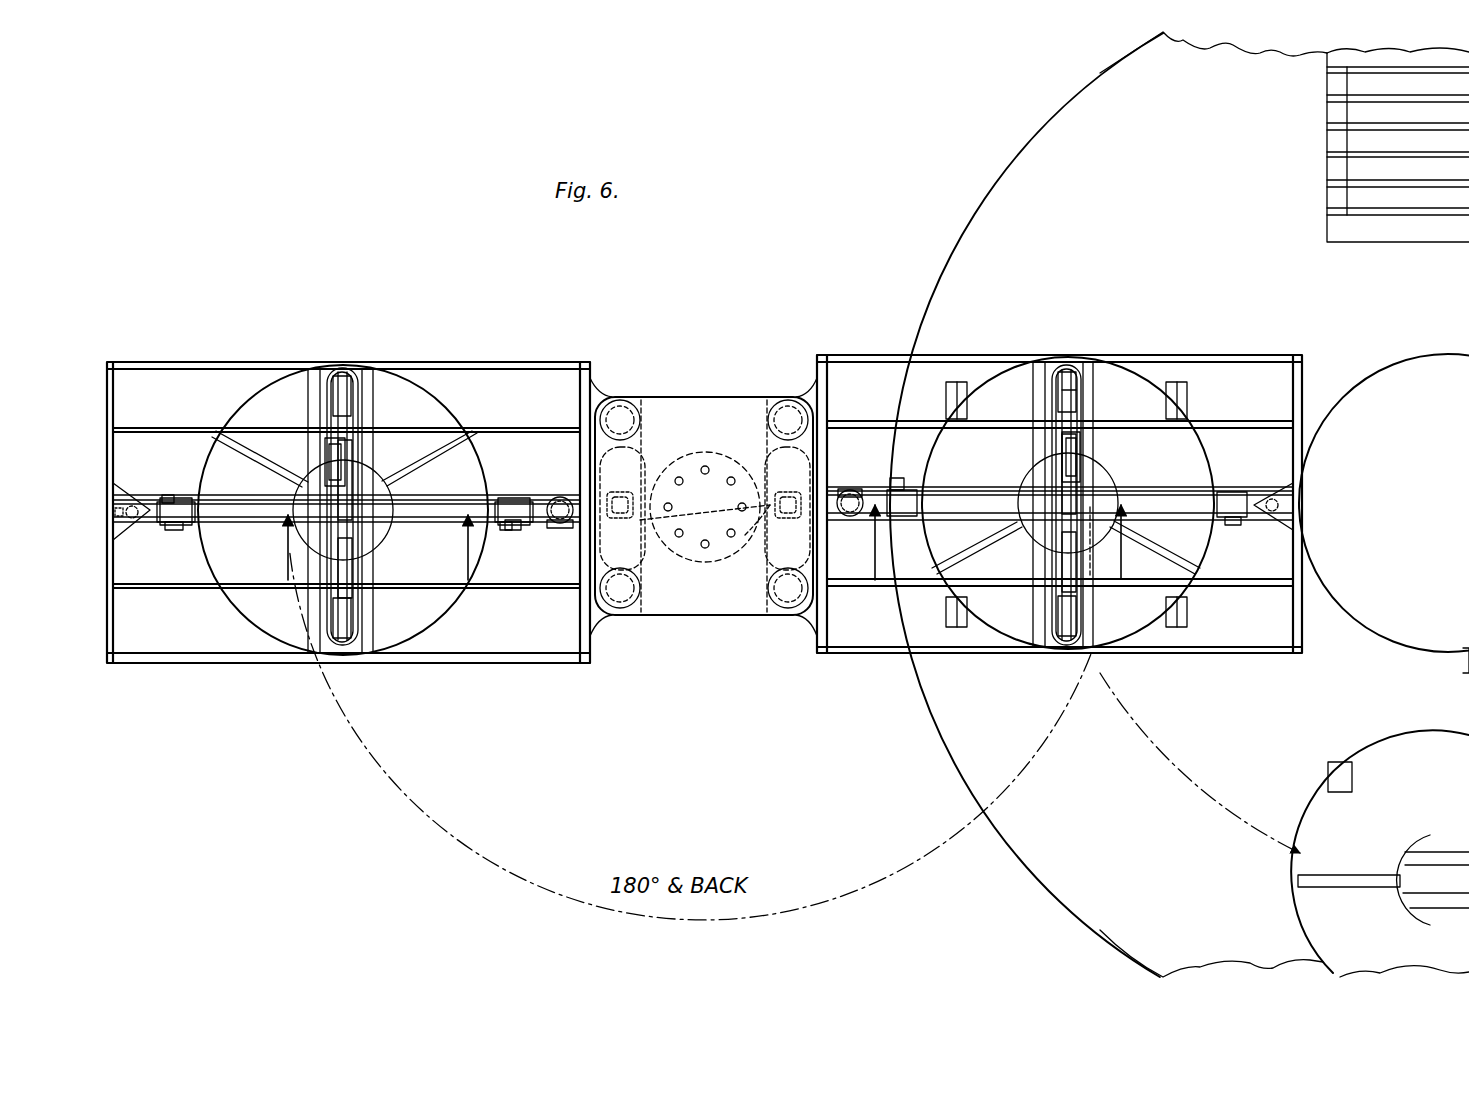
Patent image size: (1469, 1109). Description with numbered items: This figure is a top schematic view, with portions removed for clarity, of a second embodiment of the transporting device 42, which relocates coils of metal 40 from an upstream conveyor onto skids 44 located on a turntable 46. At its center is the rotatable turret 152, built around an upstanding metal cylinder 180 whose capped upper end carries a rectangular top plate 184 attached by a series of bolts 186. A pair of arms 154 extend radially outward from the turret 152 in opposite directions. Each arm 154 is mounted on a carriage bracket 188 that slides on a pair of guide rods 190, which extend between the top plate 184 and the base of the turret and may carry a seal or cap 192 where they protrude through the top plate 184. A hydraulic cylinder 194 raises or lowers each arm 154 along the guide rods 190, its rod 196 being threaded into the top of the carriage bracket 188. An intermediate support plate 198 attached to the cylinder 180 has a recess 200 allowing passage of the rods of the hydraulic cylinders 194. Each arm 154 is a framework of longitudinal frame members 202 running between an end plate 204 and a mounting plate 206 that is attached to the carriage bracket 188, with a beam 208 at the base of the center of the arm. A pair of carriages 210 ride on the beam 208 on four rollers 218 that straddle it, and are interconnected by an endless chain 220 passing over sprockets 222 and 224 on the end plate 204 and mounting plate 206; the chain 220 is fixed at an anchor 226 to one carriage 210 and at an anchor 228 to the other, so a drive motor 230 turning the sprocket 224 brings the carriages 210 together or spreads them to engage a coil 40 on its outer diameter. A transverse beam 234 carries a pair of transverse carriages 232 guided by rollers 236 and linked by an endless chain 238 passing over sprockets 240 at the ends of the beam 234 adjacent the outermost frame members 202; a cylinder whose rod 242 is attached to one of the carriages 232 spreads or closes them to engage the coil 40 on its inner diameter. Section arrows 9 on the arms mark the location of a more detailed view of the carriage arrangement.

The coil of metal 40 is at (268, 622).
The transporting device 42 is at (800, 240).
The skid 44 is at (962, 384).
The turntable 46 is at (1050, 178).
The rotatable turret 152 is at (692, 338).
The arm 154 is at (275, 326).
The upstanding metal cylinder 180 is at (705, 484).
The top plate 184 is at (742, 396).
The bolt 186 is at (738, 481).
The carriage bracket 188 is at (600, 385).
The guide rod 190 is at (648, 398).
The seal or cap 192 is at (786, 428).
The hydraulic cylinder 194 is at (705, 519).
The rod 196 is at (782, 548).
The intermediate support plate 198 is at (700, 520).
The recess 200 is at (722, 442).
The longitudinal frame member 202 is at (488, 366).
The end plate 204 is at (103, 380).
The mounting plate 206 is at (585, 358).
The beam 208 is at (246, 523).
The carriage 210 is at (183, 525).
The roller 218 is at (170, 500).
The endless chain 220 is at (254, 484).
The sprocket 222 is at (128, 498).
The sprocket 224 is at (556, 496).
The anchor 226 is at (205, 532).
The anchor 228 is at (512, 528).
The drive motor 230 is at (560, 524).
The transverse carriage 232 is at (354, 458).
The transverse beam 234 is at (338, 408).
The guide roller 236 is at (330, 447).
The endless chain 238 is at (1080, 410).
The sprocket 240 is at (350, 380).
The rod 242 is at (382, 484).
The section line 9 is at (704, 566).